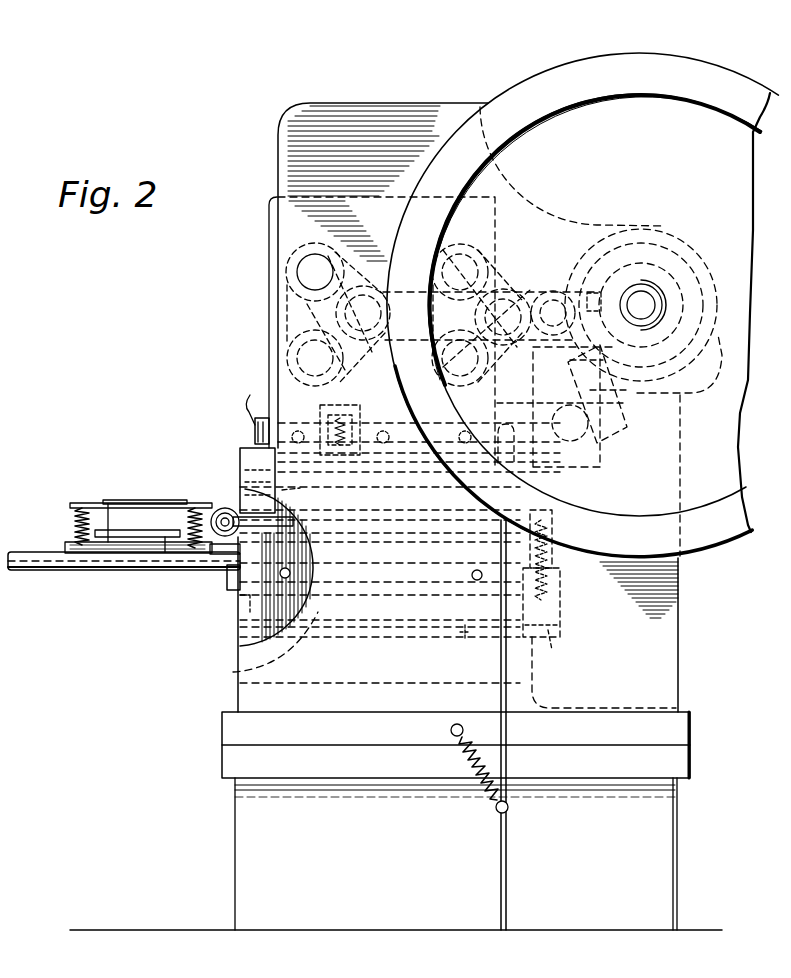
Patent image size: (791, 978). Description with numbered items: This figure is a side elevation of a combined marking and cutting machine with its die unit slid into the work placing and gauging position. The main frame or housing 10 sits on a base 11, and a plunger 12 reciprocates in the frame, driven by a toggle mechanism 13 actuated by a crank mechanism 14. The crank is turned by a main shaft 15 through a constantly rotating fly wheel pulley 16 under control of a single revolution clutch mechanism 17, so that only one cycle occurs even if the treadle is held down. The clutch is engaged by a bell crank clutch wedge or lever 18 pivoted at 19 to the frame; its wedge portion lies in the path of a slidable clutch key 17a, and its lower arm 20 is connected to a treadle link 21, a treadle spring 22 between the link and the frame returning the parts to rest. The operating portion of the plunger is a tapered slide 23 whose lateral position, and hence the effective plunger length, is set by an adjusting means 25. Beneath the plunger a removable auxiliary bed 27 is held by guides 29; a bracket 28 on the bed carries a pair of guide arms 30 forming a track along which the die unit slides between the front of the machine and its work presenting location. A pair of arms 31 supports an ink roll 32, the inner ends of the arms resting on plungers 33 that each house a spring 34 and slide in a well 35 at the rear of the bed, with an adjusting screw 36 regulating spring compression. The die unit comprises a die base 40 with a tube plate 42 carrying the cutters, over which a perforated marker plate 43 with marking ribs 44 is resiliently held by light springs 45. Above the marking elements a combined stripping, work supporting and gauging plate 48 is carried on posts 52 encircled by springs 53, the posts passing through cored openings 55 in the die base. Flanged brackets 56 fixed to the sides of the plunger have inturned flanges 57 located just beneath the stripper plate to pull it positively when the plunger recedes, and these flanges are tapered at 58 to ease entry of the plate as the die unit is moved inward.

The main frame 10 is at (413, 118).
The base 11 is at (242, 845).
The plunger 12 is at (270, 346).
The toggle mechanism 13 is at (365, 360).
The crank mechanism 14 is at (553, 290).
The main shaft 15 is at (652, 292).
The fly wheel pulley 16 is at (619, 63).
The single revolution clutch mechanism 17 is at (628, 248).
The clutch key 17a is at (600, 265).
The clutch wedge 18 is at (684, 394).
The pivot 19 is at (620, 456).
The lower arm 20 is at (570, 470).
The treadle link 21 is at (500, 888).
The treadle spring 22 is at (478, 786).
The tapered slide 23 is at (262, 463).
The adjusting means 25 is at (256, 426).
The auxiliary bed 27 is at (242, 614).
The bracket 28 is at (228, 586).
The guides 29 is at (238, 664).
The guide arms 30 is at (123, 571).
The arms 31 is at (248, 514).
The ink roll 32 is at (222, 508).
The plungers 33 is at (576, 554).
The spring 34 is at (560, 626).
The well 35 is at (561, 590).
The adjusting screw 36 is at (546, 641).
The die base 40 is at (72, 548).
The tube plate 42 is at (165, 554).
The marker plate 43 is at (98, 530).
The marking ribs 44 is at (108, 500).
The springs 45 is at (107, 553).
The stripper plate 48 is at (76, 504).
The posts 52 is at (190, 510).
The springs 53 is at (180, 532).
The cored openings 55 is at (70, 571).
The flanged brackets 56 is at (246, 444).
The inturned flange 57 is at (314, 542).
The tapered portion 58 is at (302, 488).